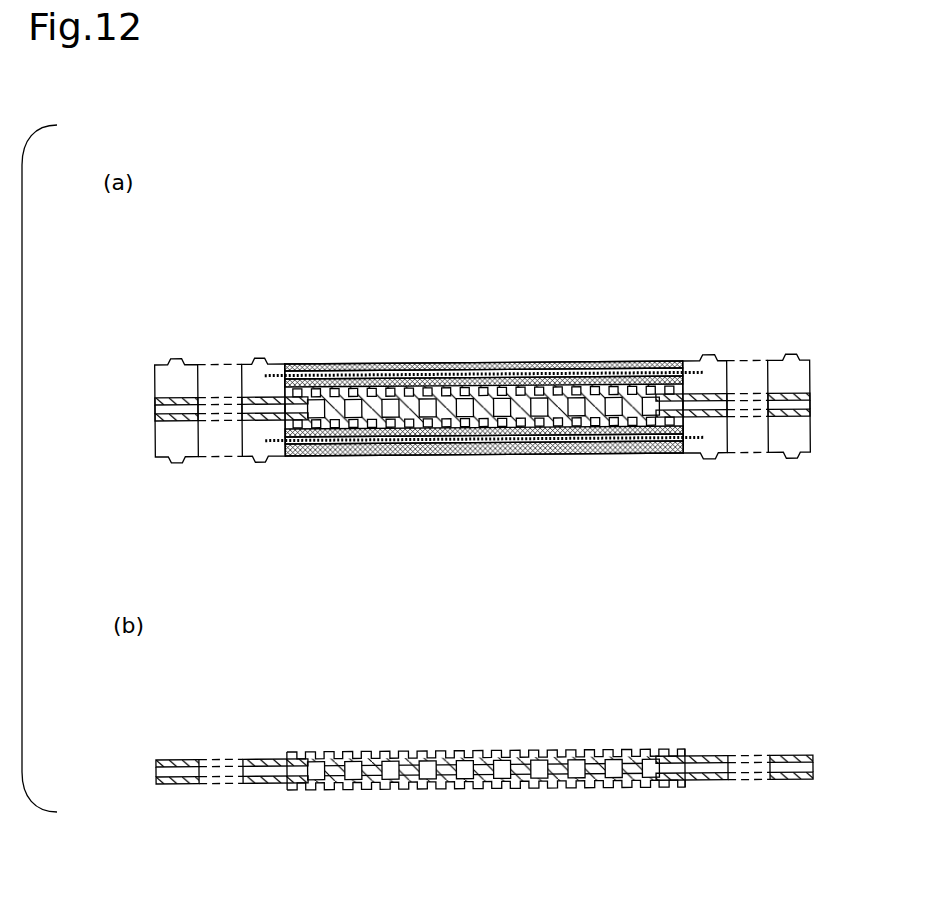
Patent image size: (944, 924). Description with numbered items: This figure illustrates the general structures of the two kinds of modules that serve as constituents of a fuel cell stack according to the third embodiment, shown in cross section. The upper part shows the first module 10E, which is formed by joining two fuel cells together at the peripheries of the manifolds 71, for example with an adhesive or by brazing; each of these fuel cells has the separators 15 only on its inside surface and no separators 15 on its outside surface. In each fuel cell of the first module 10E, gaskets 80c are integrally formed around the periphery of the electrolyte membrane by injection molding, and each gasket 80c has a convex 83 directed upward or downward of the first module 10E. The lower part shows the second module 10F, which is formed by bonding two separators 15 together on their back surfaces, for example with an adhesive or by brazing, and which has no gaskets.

The first module 10E is at (727, 258).
The second module 10F is at (735, 692).
The separator 15 is at (810, 402).
The manifold 71 is at (223, 385).
The gasket 80c is at (187, 362).
The convex 83 is at (168, 362).